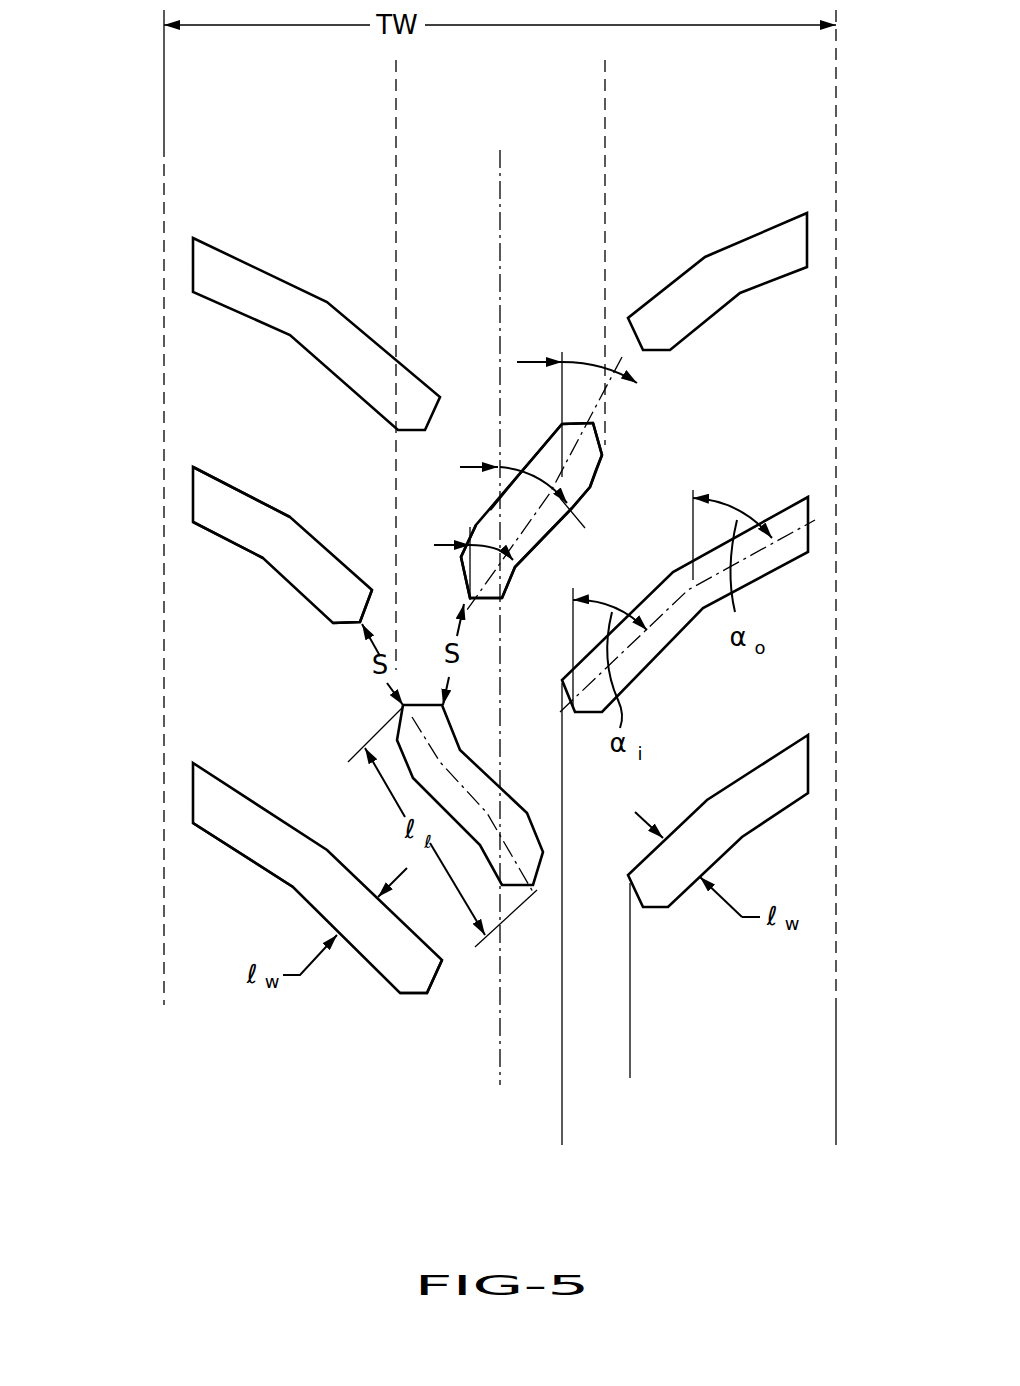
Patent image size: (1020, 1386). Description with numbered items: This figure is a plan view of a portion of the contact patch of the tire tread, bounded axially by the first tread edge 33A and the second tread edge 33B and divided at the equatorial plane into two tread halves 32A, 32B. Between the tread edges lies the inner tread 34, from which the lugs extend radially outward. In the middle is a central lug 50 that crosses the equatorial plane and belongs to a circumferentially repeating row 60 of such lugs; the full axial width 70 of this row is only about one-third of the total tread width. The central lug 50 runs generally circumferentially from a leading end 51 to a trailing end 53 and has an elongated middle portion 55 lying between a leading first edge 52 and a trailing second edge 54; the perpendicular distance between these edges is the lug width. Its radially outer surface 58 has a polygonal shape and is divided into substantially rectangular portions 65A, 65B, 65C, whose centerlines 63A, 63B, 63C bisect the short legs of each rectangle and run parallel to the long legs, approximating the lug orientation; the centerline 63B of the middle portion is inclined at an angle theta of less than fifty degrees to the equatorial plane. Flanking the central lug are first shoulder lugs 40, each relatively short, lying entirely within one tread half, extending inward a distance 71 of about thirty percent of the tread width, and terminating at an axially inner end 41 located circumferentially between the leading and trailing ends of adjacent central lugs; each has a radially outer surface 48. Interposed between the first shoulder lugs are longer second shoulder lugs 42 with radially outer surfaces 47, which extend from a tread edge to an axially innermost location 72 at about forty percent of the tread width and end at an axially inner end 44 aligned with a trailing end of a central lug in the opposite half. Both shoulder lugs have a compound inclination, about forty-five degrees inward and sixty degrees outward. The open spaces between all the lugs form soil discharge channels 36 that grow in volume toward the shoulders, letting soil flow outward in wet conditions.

The second tread edge 33B is at (164, 92).
The first tread edge 33A is at (836, 92).
The tread half 32B is at (350, 255).
The tread half 32A is at (650, 255).
The circumferentially repeating row 60 is at (548, 287).
The axial width of the row of central lugs 70 is at (605, 77).
The axial distance of first shoulder lugs 71 is at (836, 1058).
The axially innermost location of second shoulder lugs 72 is at (562, 1122).
The central lug 50 is at (688, 377).
The leading end 51 is at (487, 600).
The leading first edge 52 is at (570, 510).
The trailing end 53 is at (580, 421).
The trailing second edge 54 is at (547, 450).
The elongated middle portion 55 is at (517, 500).
The radially outer surface 58 is at (598, 460).
The centerline 63A is at (505, 567).
The central lug centerline 63B is at (553, 533).
The centerline 63C is at (578, 462).
The substantially rectangular portion 65A is at (467, 572).
The substantially rectangular portion 65B is at (490, 523).
The substantially rectangular portion 65C is at (593, 445).
The radially outer surface 48 is at (225, 490).
The first shoulder lug 40 is at (215, 503).
The soil discharge channel 36 is at (225, 583).
The inner tread 34 is at (260, 713).
The axially inner end 41 is at (350, 623).
The second shoulder lug 42 is at (217, 810).
The radially outer surface 47 is at (245, 845).
The axially inner end 44 is at (427, 995).